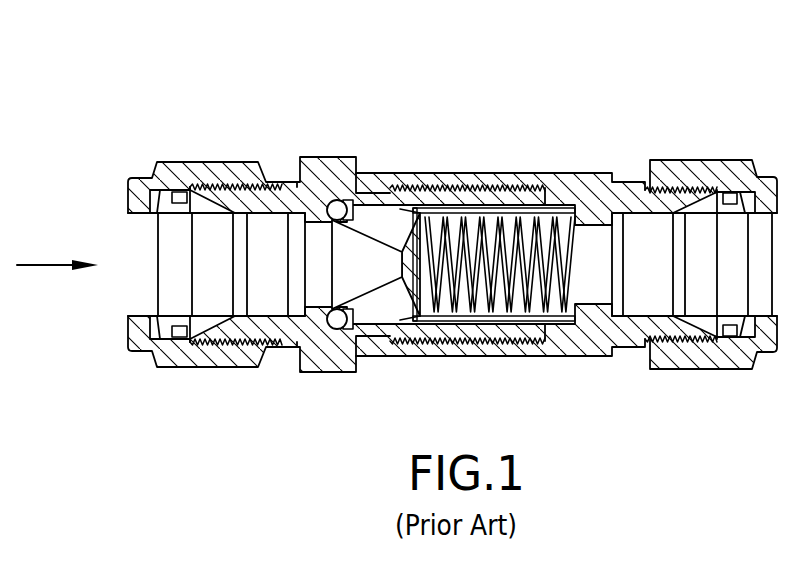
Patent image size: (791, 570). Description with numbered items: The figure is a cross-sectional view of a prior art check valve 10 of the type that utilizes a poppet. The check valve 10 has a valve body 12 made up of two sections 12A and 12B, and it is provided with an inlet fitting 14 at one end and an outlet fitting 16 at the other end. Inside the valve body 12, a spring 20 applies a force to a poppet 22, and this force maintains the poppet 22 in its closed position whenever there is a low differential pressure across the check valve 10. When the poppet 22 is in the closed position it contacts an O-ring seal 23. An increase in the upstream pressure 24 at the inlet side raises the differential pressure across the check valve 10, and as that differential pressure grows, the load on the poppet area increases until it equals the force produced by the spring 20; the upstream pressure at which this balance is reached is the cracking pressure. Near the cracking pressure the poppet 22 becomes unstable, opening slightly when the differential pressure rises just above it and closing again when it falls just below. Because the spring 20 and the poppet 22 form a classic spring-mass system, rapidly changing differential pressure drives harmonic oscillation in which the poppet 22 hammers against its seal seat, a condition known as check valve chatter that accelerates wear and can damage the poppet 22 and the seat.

The check valve 10 is at (622, 57).
The valve body 12 is at (437, 172).
The section 12A is at (387, 172).
The section 12B is at (580, 160).
The inlet fitting 14 is at (212, 160).
The outlet fitting 16 is at (715, 160).
The spring 20 is at (543, 318).
The poppet 22 is at (365, 306).
The O-ring seal 23 is at (335, 329).
The upstream pressure 24 is at (40, 263).